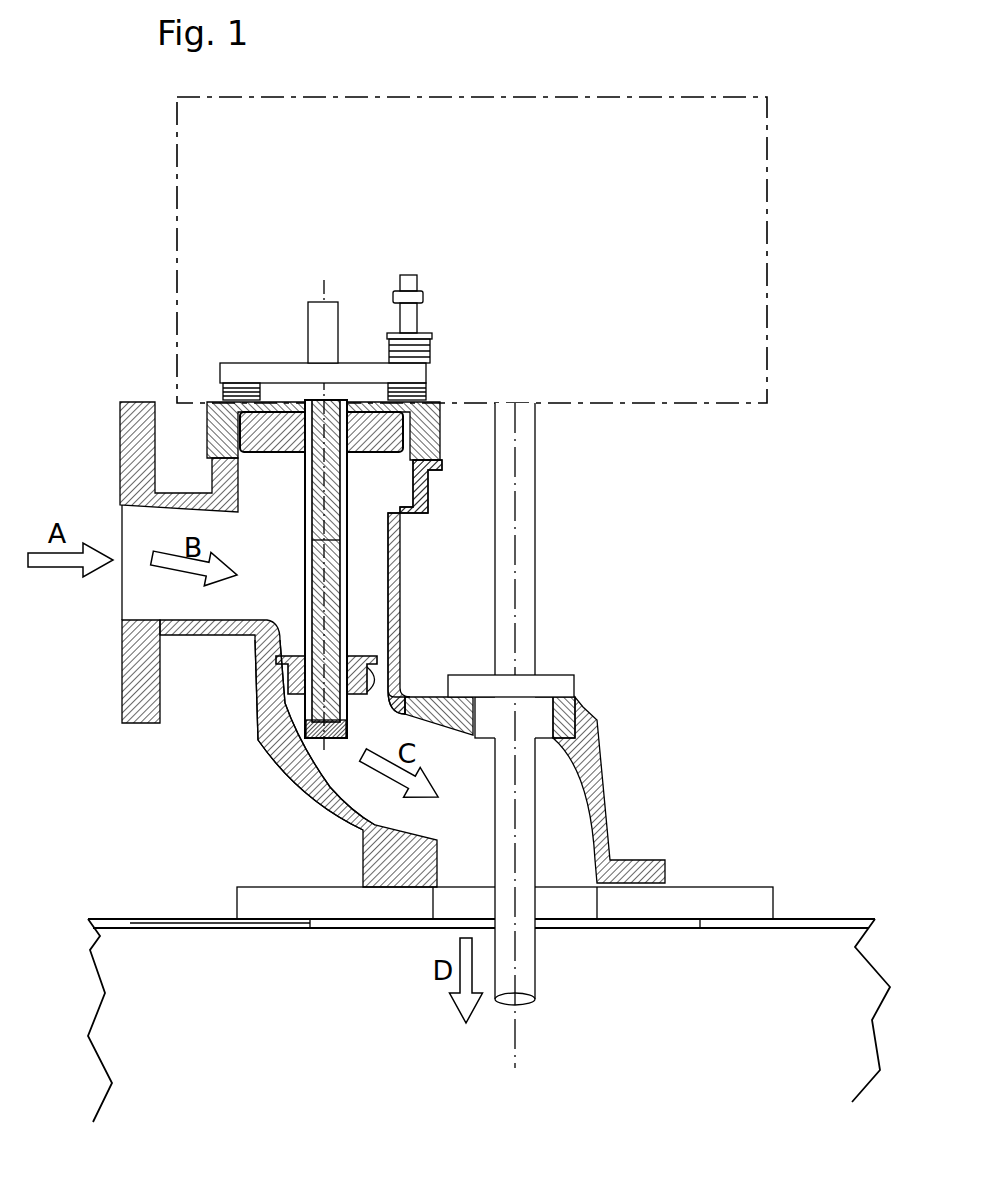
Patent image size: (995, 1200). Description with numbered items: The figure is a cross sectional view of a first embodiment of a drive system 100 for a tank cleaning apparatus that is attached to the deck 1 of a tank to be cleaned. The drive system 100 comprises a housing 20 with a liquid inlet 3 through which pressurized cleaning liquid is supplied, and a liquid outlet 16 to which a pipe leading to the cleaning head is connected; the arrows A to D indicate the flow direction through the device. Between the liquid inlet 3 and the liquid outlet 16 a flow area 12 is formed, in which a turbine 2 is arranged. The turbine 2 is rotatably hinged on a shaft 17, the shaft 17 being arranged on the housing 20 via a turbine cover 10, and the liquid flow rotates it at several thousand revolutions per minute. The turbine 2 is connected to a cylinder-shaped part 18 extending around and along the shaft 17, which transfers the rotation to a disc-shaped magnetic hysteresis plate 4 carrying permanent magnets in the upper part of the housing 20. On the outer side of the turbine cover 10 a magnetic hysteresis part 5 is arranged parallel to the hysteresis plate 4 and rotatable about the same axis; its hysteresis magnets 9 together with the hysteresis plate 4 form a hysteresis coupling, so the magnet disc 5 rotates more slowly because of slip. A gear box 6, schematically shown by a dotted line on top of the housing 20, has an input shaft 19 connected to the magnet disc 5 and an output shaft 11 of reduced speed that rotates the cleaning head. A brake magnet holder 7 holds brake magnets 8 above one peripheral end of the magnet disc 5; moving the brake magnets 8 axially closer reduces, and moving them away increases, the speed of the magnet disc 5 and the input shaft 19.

The deck 1 is at (195, 923).
The turbine 2 is at (260, 687).
The liquid inlet 3 is at (123, 538).
The magnetic hysteresis plate 4 is at (217, 408).
The magnetic hysteresis part 5 is at (297, 372).
The gear box 6 is at (185, 150).
The brake magnet holder 7 is at (420, 330).
The brake magnet 8 is at (430, 352).
The hysteresis magnets 9 is at (227, 388).
The turbine cover 10 is at (447, 413).
The rotary shaft 11 is at (522, 515).
The flow area 12 is at (304, 516).
The liquid outlet 16 is at (472, 900).
The shaft 17 is at (328, 737).
The cylinder-shaped part 18 is at (307, 557).
The input shaft 19 is at (330, 312).
The housing 20 is at (278, 763).
The drive system 100 is at (645, 573).